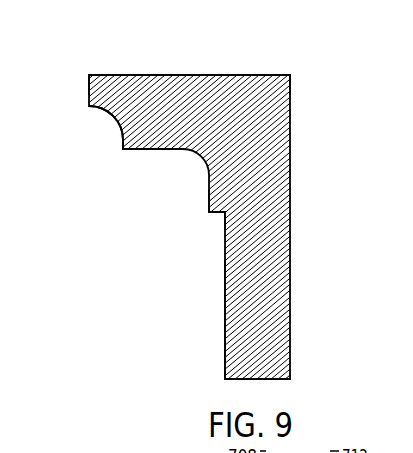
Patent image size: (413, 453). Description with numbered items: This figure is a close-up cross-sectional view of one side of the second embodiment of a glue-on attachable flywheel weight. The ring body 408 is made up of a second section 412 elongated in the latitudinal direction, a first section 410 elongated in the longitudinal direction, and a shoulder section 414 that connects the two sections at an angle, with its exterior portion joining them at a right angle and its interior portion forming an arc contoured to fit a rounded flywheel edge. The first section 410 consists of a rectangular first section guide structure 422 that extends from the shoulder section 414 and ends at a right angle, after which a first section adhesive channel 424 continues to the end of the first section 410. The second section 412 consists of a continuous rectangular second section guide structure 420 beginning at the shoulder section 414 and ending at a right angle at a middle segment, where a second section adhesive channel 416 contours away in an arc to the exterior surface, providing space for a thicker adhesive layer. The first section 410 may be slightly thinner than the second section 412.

The ring body 408 is at (101, 74).
The first section 410 is at (290, 314).
The second section 412 is at (203, 75).
The shoulder section 414 is at (290, 75).
The second section adhesive channel 416 is at (90, 111).
The second section guide structure 420 is at (133, 151).
The first section guide structure 422 is at (208, 198).
The first section adhesive channel 424 is at (225, 317).